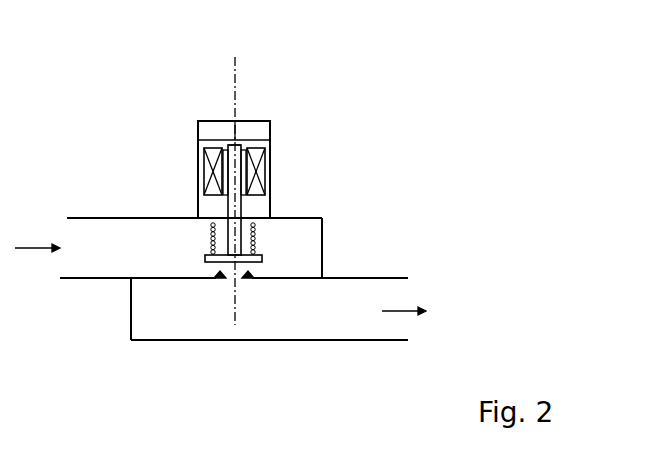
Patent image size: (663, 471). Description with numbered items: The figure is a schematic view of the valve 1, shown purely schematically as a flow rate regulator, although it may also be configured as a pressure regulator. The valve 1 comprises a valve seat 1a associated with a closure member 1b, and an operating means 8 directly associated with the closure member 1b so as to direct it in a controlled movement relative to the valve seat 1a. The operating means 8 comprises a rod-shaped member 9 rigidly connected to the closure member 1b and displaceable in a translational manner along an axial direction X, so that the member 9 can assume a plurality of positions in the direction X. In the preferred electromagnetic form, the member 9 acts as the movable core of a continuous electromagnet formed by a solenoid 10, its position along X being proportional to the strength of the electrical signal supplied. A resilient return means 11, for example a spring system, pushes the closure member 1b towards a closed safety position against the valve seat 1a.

The valve 1 is at (307, 128).
The valve seat 1a is at (226, 279).
The closure member 1b is at (263, 258).
The operating means 8 is at (247, 142).
The rod-shaped member 9 is at (241, 216).
The solenoid 10 is at (203, 188).
The resilient return means 11 is at (257, 234).
The axial direction X is at (232, 97).